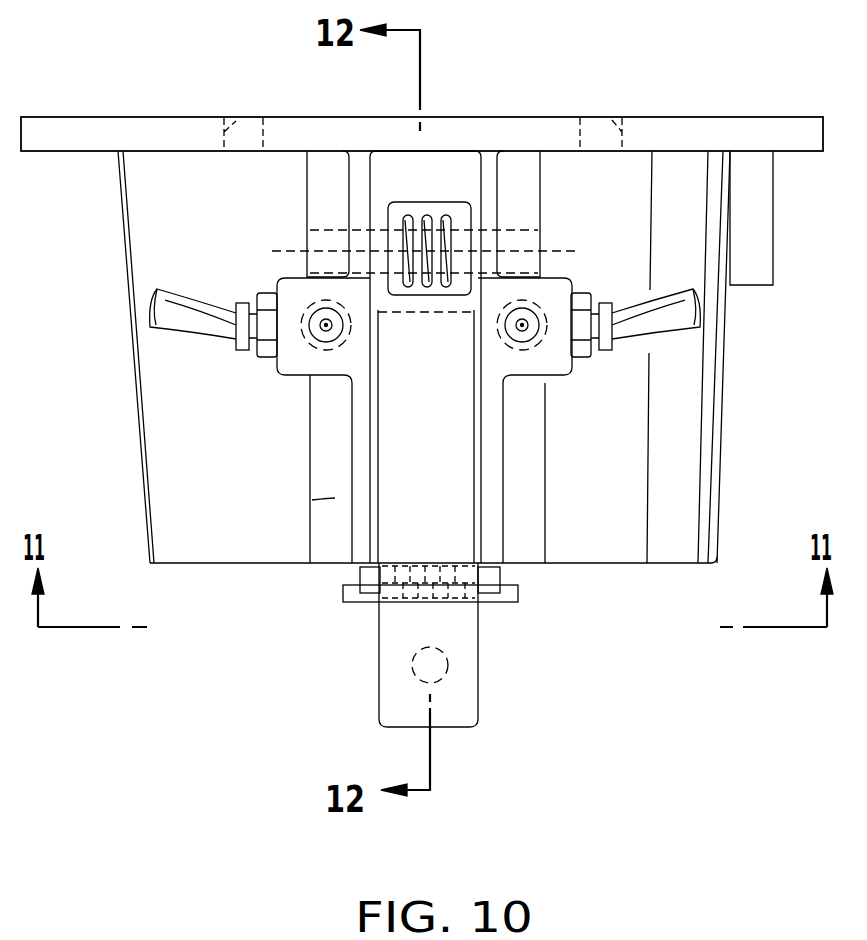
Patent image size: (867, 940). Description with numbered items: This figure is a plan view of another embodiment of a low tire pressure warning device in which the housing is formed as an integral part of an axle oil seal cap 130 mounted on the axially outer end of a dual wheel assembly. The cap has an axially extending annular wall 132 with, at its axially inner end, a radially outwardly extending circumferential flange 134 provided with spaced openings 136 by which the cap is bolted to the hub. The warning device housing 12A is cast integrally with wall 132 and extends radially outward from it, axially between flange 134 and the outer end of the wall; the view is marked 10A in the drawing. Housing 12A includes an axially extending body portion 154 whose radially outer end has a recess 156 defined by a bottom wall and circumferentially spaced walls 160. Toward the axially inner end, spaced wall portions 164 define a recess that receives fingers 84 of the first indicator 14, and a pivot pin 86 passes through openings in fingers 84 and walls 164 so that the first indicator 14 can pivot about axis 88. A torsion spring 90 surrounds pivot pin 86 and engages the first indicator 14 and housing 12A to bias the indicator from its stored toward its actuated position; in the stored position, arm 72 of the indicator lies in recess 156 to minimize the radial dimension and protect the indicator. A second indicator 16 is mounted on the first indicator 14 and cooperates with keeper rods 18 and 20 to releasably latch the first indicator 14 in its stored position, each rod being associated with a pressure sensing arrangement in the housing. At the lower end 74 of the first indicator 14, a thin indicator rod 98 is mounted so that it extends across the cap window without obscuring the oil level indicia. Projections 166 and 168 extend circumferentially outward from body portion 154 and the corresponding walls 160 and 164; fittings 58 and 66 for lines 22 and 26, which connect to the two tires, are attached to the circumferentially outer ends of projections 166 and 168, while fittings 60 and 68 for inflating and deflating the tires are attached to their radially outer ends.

The circumferential flange 134 is at (135, 117).
The openings 136 is at (232, 118).
The wall portions 164 is at (358, 162).
The torsion spring 90 is at (426, 215).
The fingers 84 is at (382, 205).
The pivot pin 86 is at (335, 230).
The axis 88 is at (300, 250).
The annular wall 132 is at (152, 216).
The axle oil seal cap 130 is at (112, 290).
The fitting 66 is at (264, 300).
The line 26 is at (180, 318).
The projection 168 is at (290, 385).
The housing 12A is at (290, 410).
The recess 156 is at (372, 442).
The arm 72 is at (392, 470).
The body portion 154 is at (335, 500).
The walls 160 is at (360, 523).
The keeper rod 20 is at (345, 587).
The keeper rod 18 is at (532, 582).
The second indicator 16 is at (545, 613).
The first indicator 14 is at (360, 652).
The lower end 74 is at (360, 695).
The indicator rod 98 is at (450, 665).
The projection 166 is at (552, 357).
The section view reference 10A is at (590, 447).
The line 22 is at (680, 318).
The fitting 58 is at (583, 300).
The fitting 60 is at (530, 303).
The fitting 68 is at (350, 332).